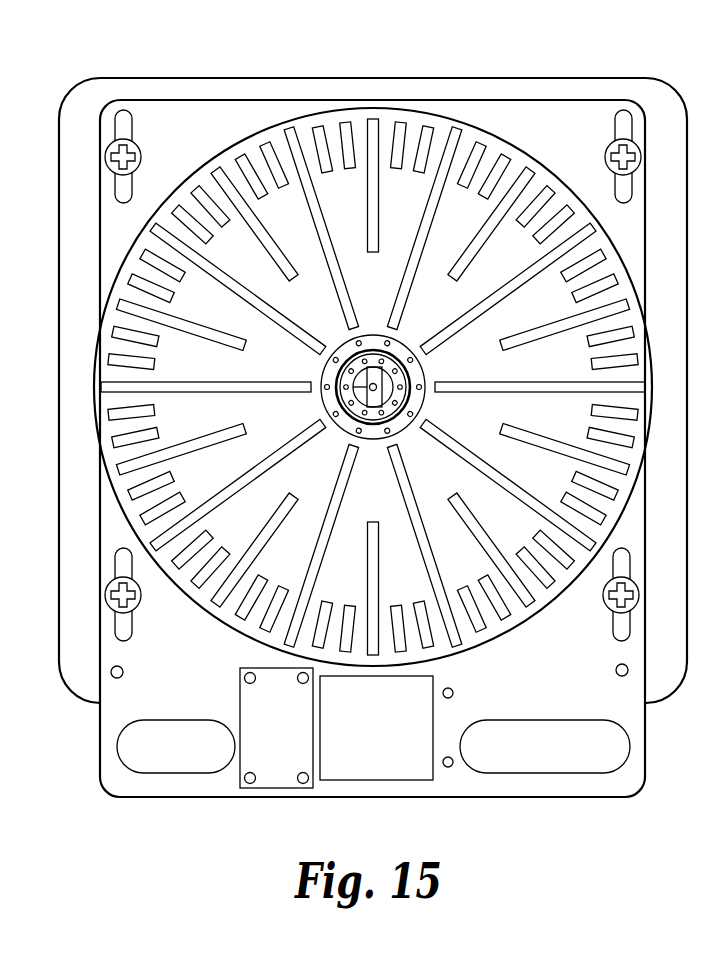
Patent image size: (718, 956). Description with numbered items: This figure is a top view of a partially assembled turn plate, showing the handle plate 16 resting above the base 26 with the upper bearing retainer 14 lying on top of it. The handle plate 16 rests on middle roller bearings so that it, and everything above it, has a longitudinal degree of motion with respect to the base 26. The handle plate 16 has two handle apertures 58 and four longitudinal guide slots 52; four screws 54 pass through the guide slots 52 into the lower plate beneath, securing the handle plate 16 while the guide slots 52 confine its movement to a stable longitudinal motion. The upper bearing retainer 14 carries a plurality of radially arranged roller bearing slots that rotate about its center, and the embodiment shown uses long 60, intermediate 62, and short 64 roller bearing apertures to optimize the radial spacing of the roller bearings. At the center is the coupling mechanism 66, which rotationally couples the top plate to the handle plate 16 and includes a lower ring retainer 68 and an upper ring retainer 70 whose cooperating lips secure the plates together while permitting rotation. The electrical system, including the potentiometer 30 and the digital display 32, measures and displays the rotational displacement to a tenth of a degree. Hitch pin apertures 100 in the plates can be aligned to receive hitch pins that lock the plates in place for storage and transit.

The upper bearing retainer 14 is at (648, 448).
The handle plate 16 is at (585, 797).
The base 26 is at (208, 78).
The potentiometer 30 is at (352, 380).
The digital display 32 is at (401, 780).
The longitudinal guide slots 52 is at (133, 118).
The screws 54 is at (140, 166).
The handle apertures 58 is at (195, 773).
The long roller bearing apertures 60 is at (525, 397).
The intermediate roller bearing apertures 62 is at (565, 321).
The short roller bearing apertures 64 is at (587, 342).
The coupling mechanism 66 is at (433, 410).
The lower ring retainer 68 is at (426, 367).
The upper ring retainer 70 is at (345, 433).
The hitch pin apertures 100 is at (124, 678).